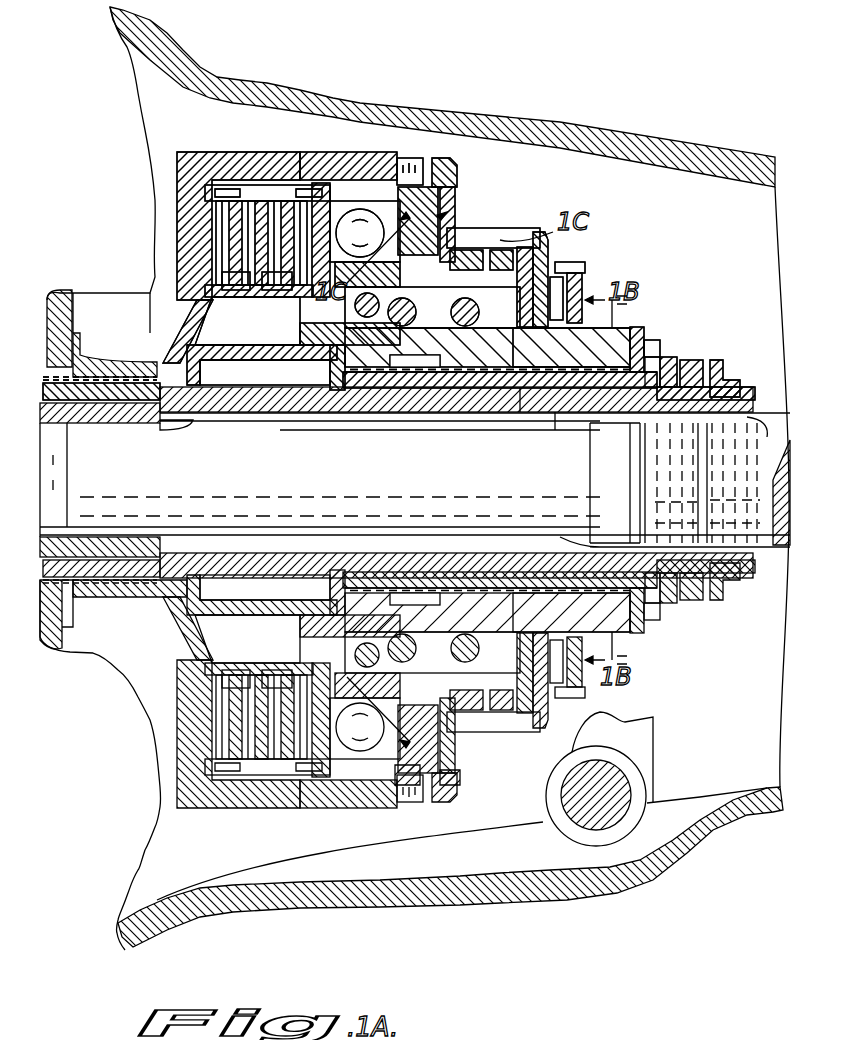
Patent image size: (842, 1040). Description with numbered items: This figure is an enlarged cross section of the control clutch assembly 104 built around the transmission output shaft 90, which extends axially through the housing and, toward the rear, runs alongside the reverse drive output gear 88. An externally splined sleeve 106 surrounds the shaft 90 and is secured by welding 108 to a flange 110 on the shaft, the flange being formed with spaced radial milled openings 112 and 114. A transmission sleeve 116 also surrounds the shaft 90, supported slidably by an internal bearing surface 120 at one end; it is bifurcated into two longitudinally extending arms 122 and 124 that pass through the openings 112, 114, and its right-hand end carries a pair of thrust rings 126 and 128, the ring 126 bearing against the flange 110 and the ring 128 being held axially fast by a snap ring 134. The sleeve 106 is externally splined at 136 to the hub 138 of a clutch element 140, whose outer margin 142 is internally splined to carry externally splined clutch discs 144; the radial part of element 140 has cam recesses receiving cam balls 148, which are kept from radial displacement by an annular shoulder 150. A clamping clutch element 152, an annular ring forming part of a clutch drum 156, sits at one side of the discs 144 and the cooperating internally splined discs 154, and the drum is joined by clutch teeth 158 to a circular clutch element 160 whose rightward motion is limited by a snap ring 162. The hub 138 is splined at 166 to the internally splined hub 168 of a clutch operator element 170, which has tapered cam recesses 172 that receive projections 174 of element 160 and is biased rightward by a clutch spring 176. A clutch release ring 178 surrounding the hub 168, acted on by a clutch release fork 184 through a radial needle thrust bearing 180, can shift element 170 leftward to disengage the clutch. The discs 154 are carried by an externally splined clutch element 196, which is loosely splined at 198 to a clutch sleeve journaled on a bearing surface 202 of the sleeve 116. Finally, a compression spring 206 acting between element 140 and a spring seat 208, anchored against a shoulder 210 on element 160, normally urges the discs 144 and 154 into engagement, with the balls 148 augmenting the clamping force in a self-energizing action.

The reverse drive output gear 88 is at (60, 297).
The transmission output shaft 90 is at (790, 415).
The control clutch assembly 104 is at (551, 167).
The externally splined sleeve 106 is at (520, 378).
The welding 108 is at (675, 360).
The flange 110 is at (615, 445).
The milled opening 112 is at (557, 415).
The milled opening 114 is at (615, 522).
The transmission sleeve 116 is at (160, 368).
The internal bearing surface 120 is at (778, 442).
The longitudinally extending arm 122 is at (398, 405).
The longitudinally extending arm 124 is at (478, 535).
The thrust ring 126 is at (695, 360).
The thrust ring 128 is at (722, 368).
The snap ring 134 is at (730, 388).
The external spline 136 is at (622, 345).
The hub 138 is at (571, 347).
The clutch element 140 is at (320, 190).
The outer margin 142 is at (238, 178).
The externally splined clutch discs 144 is at (264, 185).
The cam ball 148 is at (370, 210).
The annular shoulder 150 is at (365, 278).
The clamping clutch element 152 is at (195, 230).
The internally splined clutch discs 154 is at (200, 268).
The clutch drum 156 is at (312, 152).
The clutch teeth 158 is at (420, 160).
The circular clutch element 160 is at (456, 169).
The snap ring 162 is at (448, 160).
The external spline 166 is at (545, 295).
The internally splined hub 168 is at (650, 345).
The clutch operator element 170 is at (570, 240).
The cam recess 172 is at (492, 730).
The projection 174 is at (490, 230).
The clutch spring 176 is at (488, 266).
The clutch release ring 178 is at (590, 262).
The radial needle thrust bearing 180 is at (590, 300).
The clutch release fork 184 is at (605, 720).
The externally splined clutch element 196 is at (178, 310).
The internal spline 198 is at (108, 362).
The bearing surface 202 is at (101, 421).
The compression spring 206 is at (322, 320).
The spring seat 208 is at (501, 329).
The shoulder 210 is at (437, 215).